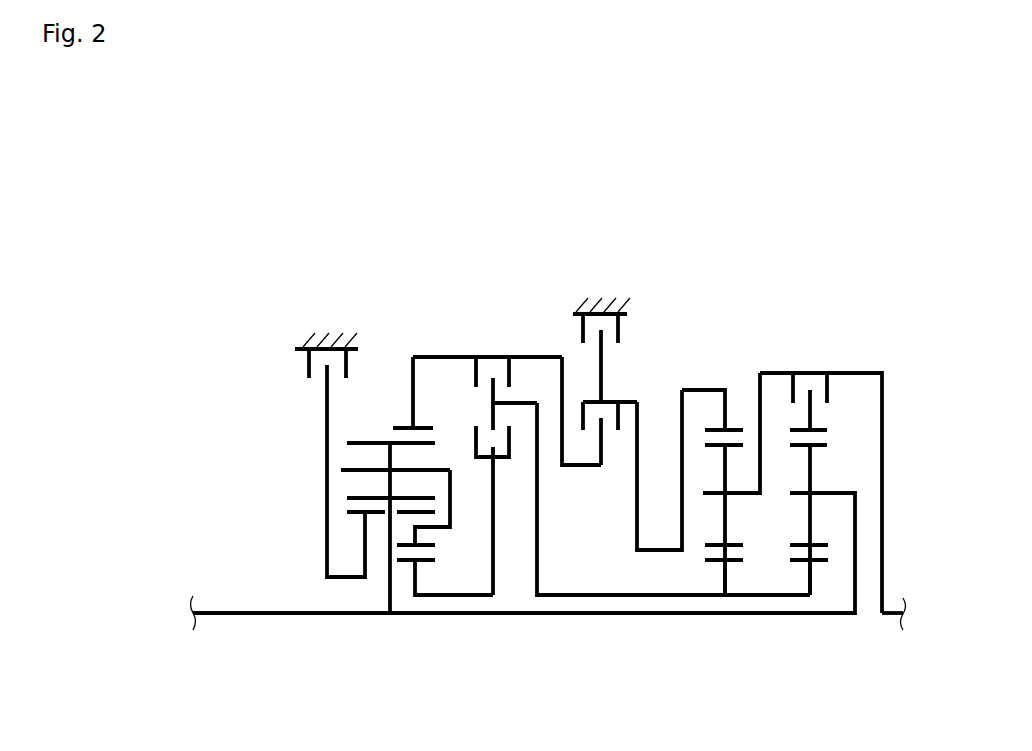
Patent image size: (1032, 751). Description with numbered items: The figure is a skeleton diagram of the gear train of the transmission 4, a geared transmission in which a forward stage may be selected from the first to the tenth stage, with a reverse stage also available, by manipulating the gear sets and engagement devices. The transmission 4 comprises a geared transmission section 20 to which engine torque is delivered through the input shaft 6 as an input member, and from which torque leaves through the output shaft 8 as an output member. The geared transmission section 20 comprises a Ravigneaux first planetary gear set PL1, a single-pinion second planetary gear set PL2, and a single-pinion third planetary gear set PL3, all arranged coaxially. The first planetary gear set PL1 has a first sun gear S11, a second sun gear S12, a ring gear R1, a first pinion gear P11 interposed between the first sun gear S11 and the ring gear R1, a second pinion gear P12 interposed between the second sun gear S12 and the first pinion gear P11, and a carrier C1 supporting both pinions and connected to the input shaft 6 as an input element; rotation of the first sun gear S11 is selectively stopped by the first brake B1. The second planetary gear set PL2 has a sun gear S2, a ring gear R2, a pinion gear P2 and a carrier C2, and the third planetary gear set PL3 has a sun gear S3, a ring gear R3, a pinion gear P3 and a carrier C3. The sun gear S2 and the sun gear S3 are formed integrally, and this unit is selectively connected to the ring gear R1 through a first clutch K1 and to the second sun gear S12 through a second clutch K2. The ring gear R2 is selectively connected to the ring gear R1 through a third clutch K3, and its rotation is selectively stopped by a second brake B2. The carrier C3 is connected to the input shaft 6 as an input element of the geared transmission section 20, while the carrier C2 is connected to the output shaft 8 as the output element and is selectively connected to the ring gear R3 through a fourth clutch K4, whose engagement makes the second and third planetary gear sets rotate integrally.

The transmission 4 is at (586, 172).
The geared transmission section 20 is at (484, 302).
The input shaft 6 is at (213, 618).
The output shaft 8 is at (887, 620).
The first planetary gear set PL1 is at (348, 625).
The second planetary gear set PL2 is at (712, 620).
The third planetary gear set PL3 is at (795, 620).
The first brake B1 is at (347, 361).
The second brake B2 is at (620, 328).
The first clutch K1 is at (510, 372).
The second clutch K2 is at (509, 443).
The third clutch K3 is at (610, 401).
The fourth clutch K4 is at (828, 387).
The ring gear R1 is at (405, 427).
The ring gear R2 is at (712, 427).
The ring gear R3 is at (817, 428).
The carrier C1 is at (450, 500).
The carrier C2 is at (745, 493).
The carrier C3 is at (837, 493).
The first pinion gear P11 is at (368, 440).
The second pinion gear P12 is at (432, 512).
The pinion gear P2 is at (735, 543).
The pinion gear P3 is at (815, 543).
The first sun gear S11 is at (357, 513).
The second sun gear S12 is at (422, 560).
The sun gear S2 is at (713, 562).
The sun gear S3 is at (800, 562).